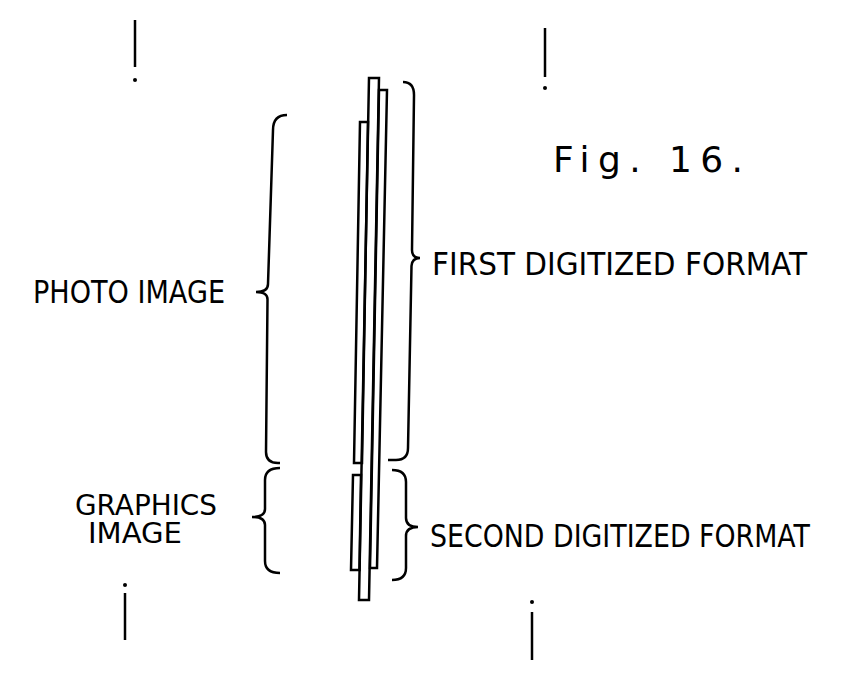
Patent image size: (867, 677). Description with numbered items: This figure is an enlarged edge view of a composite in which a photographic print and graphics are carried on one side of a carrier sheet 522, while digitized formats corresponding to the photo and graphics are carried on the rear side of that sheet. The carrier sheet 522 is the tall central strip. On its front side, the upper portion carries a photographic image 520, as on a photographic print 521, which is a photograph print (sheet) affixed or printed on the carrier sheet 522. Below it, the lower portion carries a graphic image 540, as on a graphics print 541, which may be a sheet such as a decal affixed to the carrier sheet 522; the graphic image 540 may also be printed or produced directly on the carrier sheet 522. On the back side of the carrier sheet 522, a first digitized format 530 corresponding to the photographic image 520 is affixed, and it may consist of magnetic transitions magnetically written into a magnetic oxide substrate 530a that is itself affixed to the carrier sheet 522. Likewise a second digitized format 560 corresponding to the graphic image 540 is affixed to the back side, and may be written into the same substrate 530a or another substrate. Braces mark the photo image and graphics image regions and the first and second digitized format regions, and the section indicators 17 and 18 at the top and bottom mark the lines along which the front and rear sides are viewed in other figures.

The section line 17- 17 is at (132, 30).
The section line 18- 18 is at (602, 45).
The photographic image 520 is at (358, 218).
The photographic print 521 is at (367, 175).
The carrier sheet 522 is at (369, 97).
The first digitized format 530 is at (385, 135).
The magnetic oxide substrate 530a is at (380, 200).
The graphic image 540 is at (349, 552).
The graphics print 541 is at (353, 492).
The second digitized format 560 is at (375, 550).